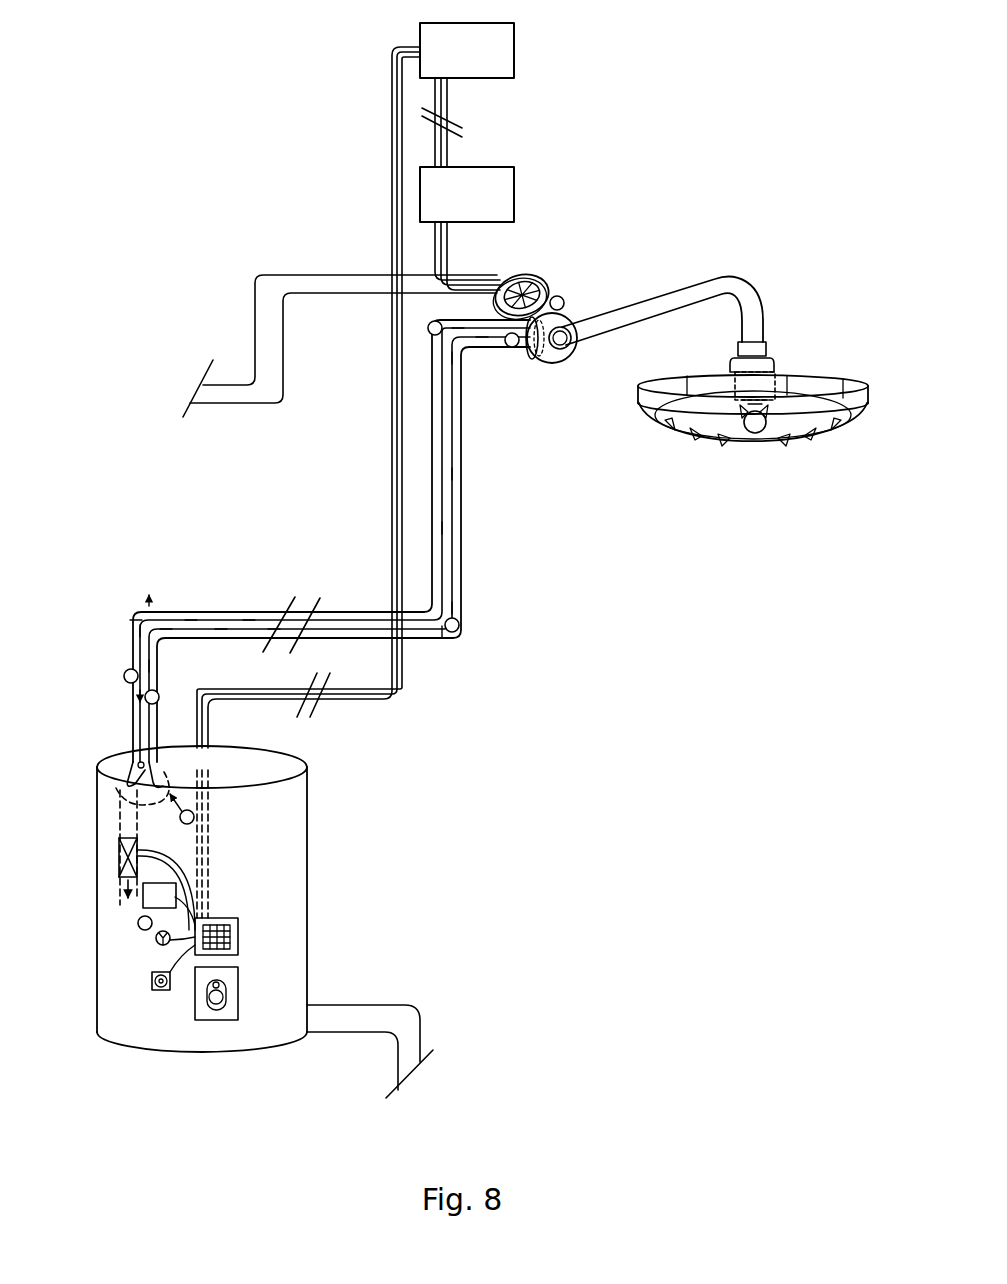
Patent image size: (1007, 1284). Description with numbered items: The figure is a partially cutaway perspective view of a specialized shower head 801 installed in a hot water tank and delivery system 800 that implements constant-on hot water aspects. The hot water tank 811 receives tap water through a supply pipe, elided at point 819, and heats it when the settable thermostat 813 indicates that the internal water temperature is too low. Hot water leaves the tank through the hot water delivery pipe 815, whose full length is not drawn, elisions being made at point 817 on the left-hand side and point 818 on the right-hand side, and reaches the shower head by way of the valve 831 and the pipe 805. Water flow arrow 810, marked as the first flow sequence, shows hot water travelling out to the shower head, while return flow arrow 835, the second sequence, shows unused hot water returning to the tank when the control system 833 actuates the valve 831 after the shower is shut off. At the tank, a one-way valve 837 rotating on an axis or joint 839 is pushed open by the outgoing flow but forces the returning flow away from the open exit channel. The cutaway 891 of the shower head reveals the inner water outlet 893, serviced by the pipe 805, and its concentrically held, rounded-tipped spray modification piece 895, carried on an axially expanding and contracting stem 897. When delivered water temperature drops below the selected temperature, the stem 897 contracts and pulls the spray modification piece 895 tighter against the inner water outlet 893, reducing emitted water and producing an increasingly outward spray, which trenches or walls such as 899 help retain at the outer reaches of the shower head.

The hot water tank and delivery system 800 is at (113, 502).
The shower head 801 is at (723, 403).
The pipe 805 is at (661, 305).
The water flow arrow 810 is at (513, 334).
The hot water tank 811 is at (82, 1048).
The settable thermostat 813 is at (200, 1021).
The hot water delivery pipe 815 is at (461, 546).
The elision point 817 is at (280, 594).
The elision point 818 is at (312, 653).
The elision point 819 is at (380, 1086).
The valve 831 is at (556, 302).
The control system 833 is at (516, 46).
The return flow arrow 835 is at (444, 432).
The one-way valve 837 is at (141, 761).
The axis/joint 839 is at (137, 762).
The cutaway 891 is at (850, 432).
The inner water outlet 893 is at (752, 412).
The spray modification piece 895 is at (760, 428).
The stem 897 is at (760, 396).
The trench or wall 899 is at (706, 436).